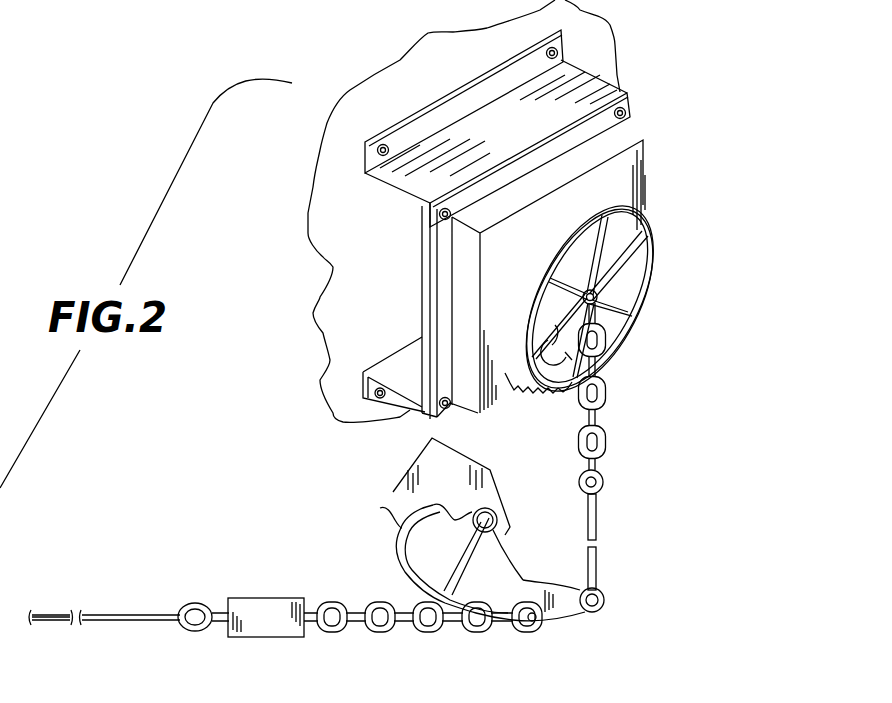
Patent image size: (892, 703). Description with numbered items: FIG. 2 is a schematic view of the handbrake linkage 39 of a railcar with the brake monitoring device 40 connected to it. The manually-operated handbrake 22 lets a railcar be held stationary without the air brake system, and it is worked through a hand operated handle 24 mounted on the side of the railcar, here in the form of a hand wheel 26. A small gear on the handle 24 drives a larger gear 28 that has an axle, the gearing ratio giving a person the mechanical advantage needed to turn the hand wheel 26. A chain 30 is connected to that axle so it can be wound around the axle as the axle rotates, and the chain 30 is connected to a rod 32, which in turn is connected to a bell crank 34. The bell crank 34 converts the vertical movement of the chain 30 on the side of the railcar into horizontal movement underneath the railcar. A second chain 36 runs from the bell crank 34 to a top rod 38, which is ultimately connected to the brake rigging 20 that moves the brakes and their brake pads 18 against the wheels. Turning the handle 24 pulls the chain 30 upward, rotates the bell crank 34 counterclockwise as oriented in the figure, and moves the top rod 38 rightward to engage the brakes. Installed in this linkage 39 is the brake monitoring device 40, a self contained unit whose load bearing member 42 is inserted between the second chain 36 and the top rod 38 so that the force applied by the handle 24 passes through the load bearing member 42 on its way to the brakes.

The brake pads 18 is at (0, 3).
The brake rigging 20 is at (37, 609).
The handbrake 22 is at (612, 625).
The handle 24 is at (562, 245).
The hand wheel 26 is at (653, 275).
The larger gear 28 is at (528, 390).
The chain 30 is at (604, 435).
The rod 32 is at (598, 516).
The bell crank 34 is at (410, 525).
The second chain 36 is at (381, 633).
The top rod 38 is at (133, 614).
The handbrake linkage 39 is at (527, 637).
The brake monitoring device 40 is at (265, 600).
The load bearing member 42 is at (216, 637).